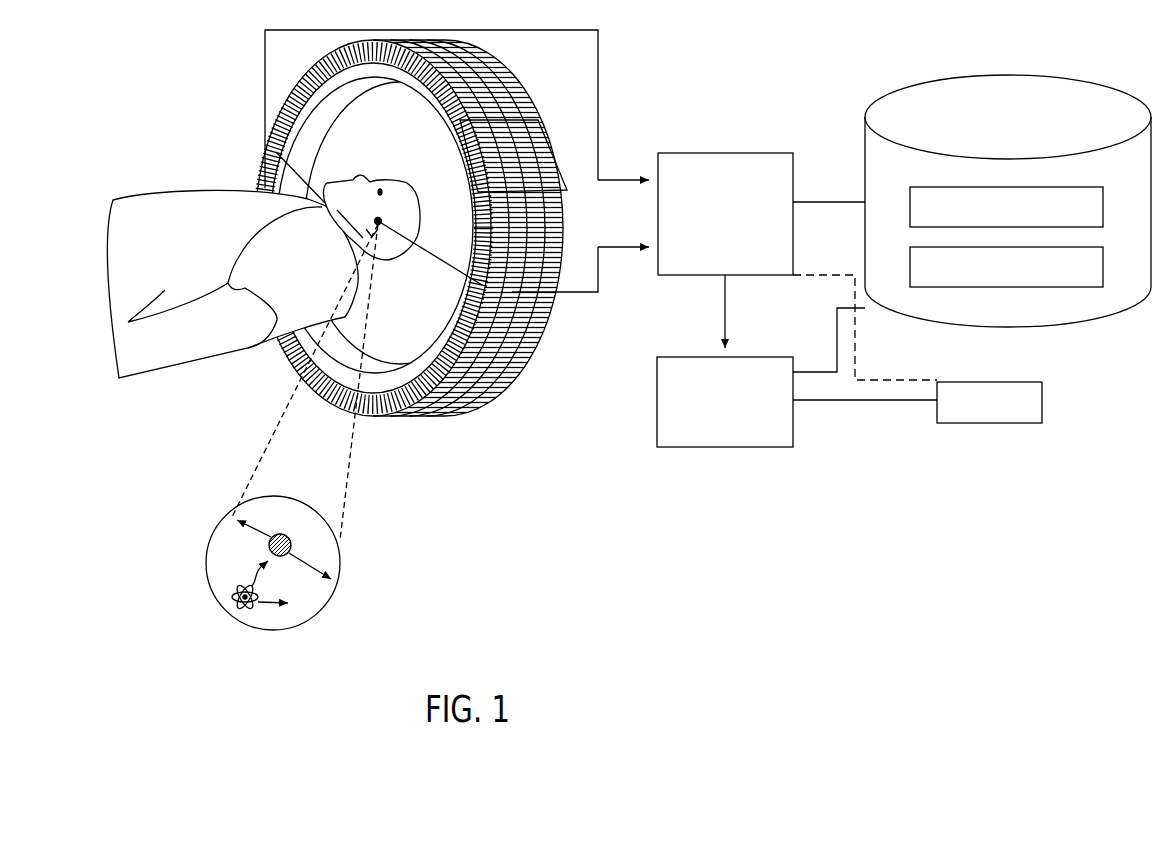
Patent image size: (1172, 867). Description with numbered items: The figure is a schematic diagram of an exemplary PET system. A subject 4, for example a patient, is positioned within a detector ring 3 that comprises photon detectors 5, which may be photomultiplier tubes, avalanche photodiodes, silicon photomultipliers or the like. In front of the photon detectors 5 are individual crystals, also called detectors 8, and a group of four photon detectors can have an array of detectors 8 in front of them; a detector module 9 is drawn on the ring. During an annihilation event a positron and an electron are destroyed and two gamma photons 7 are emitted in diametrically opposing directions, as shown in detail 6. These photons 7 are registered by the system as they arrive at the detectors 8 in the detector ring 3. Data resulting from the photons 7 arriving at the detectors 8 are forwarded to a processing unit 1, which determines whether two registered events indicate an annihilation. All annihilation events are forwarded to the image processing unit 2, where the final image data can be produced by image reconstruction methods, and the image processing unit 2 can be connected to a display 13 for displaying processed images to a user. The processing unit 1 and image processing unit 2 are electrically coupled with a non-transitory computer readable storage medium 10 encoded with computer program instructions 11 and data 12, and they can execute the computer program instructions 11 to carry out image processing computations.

The processing unit 1 is at (757, 153).
The image processing unit 2 is at (757, 357).
The detector ring 3 is at (520, 82).
The subject 4 is at (197, 203).
The photon detectors 5 is at (508, 370).
The detail 6 is at (283, 627).
The gamma photons 7 is at (232, 518).
The detectors 8 is at (428, 354).
The detector module 9 is at (538, 120).
The computer readable storage medium 10 is at (1028, 110).
The computer program instructions 11 is at (1063, 185).
The data 12 is at (1060, 287).
The display 13 is at (1045, 400).